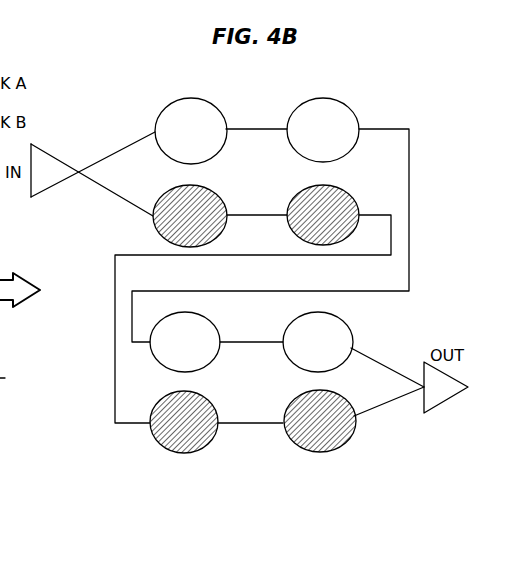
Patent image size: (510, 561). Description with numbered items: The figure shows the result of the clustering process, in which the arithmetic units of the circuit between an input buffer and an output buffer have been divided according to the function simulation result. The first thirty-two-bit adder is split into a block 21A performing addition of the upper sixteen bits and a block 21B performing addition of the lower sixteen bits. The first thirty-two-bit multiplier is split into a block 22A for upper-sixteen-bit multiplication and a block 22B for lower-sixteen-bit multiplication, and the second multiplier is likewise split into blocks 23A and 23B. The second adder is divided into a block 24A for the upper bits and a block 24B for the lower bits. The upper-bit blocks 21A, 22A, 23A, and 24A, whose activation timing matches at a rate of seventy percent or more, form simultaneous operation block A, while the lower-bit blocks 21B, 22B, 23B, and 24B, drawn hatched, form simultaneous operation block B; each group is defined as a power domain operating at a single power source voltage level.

The block which performs addition of the upper 16 bits 21A is at (222, 112).
The block which performs addition of the lower 16 bits 21B is at (222, 198).
The block which performs multiplication of the upper 16 bits 22A is at (352, 112).
The block which performs multiplication of the lower 16 bits 22B is at (352, 198).
The block which performs multiplication of the upper 16 bits 23A is at (218, 328).
The block which performs multiplication of the lower 16 bits 23B is at (214, 404).
The block which performs addition of the upper 16 bits 24A is at (350, 328).
The block which performs addition of the lower 16 bits 24B is at (352, 404).